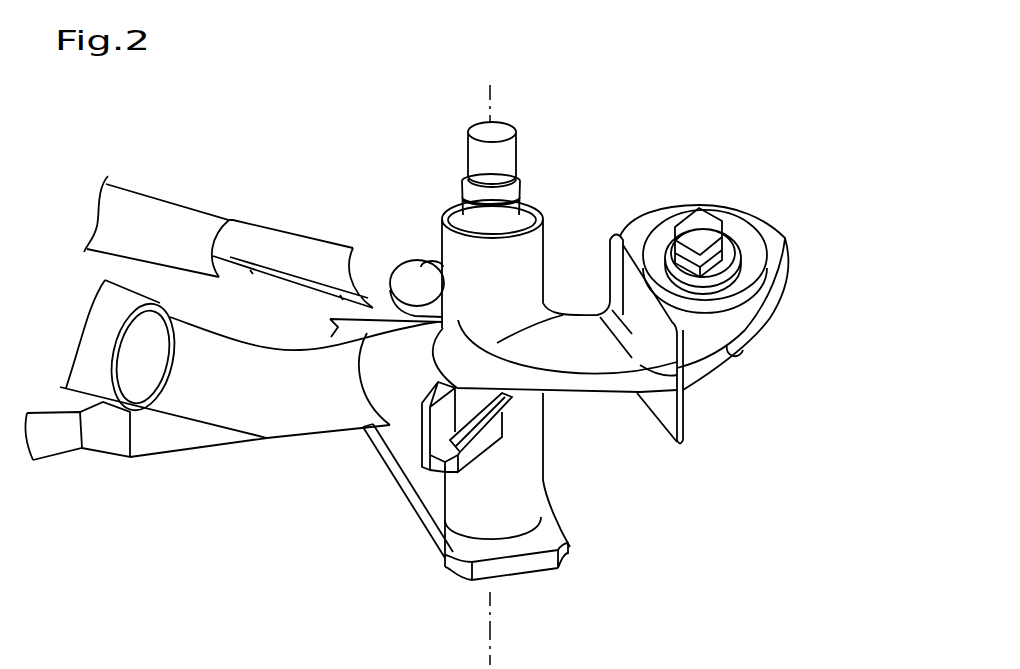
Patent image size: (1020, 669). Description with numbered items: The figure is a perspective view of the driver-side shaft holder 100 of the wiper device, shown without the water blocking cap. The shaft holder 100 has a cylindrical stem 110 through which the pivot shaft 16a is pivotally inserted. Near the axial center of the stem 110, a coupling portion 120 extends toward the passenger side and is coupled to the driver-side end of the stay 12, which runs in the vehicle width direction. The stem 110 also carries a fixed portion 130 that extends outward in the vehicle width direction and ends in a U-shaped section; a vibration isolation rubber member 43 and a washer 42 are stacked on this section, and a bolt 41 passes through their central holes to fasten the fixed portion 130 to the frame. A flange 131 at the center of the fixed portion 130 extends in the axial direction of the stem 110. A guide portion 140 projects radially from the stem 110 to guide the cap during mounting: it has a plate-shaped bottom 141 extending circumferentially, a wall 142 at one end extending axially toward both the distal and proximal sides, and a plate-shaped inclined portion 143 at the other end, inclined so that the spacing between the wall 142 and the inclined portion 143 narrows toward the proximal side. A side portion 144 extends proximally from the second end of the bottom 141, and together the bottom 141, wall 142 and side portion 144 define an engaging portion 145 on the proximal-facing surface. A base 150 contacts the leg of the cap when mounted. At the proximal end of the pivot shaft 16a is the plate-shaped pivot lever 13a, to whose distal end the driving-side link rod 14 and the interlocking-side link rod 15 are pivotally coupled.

The shaft holder 100 is at (698, 478).
The stem 110 is at (441, 237).
The coupling portion 120 is at (222, 432).
The fixed portion 130 is at (773, 318).
The flange 131 is at (610, 267).
The guide portion 140 is at (490, 478).
The bottom 141 is at (380, 455).
The wall 142 is at (430, 481).
The inclined portion 143 is at (505, 395).
The side portion 144 is at (433, 533).
The engaging portion 145 is at (437, 487).
The base 150 is at (553, 400).
The stay 12 is at (125, 297).
The pivot lever 13a is at (570, 563).
The driving-side link rod 14 is at (107, 457).
The interlocking-side link rod 15 is at (163, 195).
The pivot shaft 16a is at (517, 144).
The bolt 41 is at (706, 224).
The washer 42 is at (728, 238).
The vibration isolation rubber member 43 is at (757, 228).